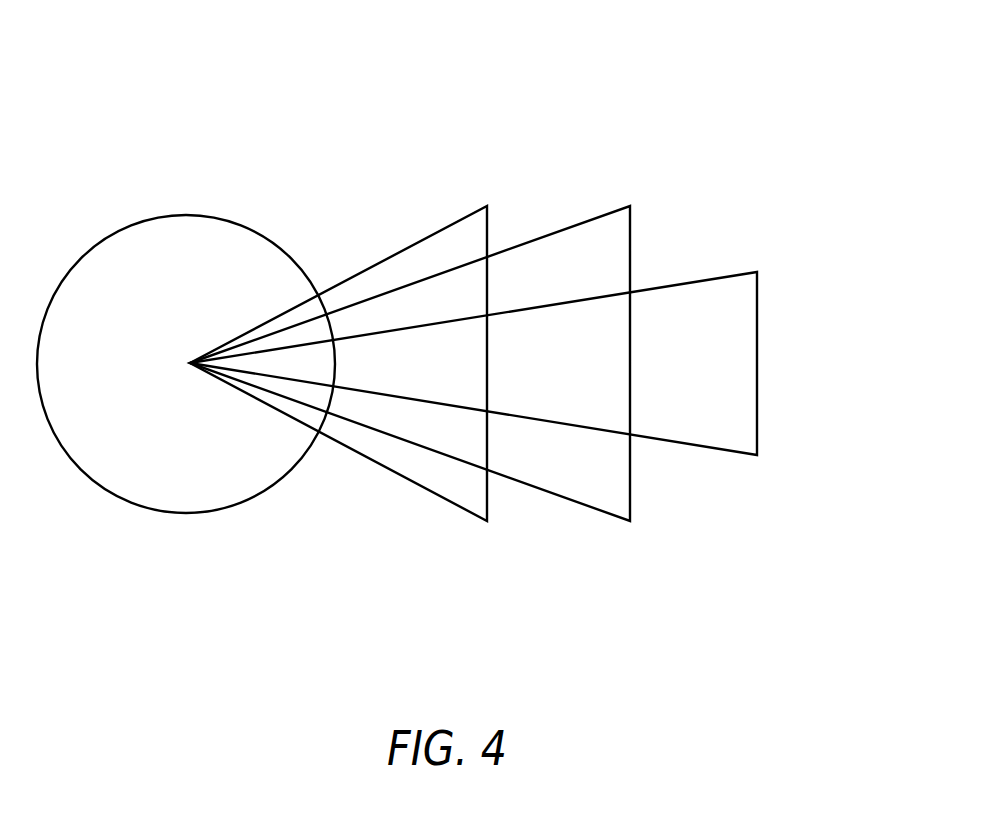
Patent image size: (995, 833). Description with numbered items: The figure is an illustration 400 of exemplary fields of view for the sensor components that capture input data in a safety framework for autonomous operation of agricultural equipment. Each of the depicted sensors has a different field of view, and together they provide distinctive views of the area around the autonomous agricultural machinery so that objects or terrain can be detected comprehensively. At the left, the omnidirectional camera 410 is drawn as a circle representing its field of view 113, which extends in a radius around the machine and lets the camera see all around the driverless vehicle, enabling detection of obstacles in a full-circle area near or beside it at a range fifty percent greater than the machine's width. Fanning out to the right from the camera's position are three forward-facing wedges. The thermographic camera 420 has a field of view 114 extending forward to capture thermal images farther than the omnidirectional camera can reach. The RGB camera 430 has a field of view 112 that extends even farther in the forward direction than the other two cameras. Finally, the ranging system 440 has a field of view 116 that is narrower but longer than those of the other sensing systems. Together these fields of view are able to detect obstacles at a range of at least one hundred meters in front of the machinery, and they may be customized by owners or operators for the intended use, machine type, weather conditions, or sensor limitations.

The illustration 400 is at (812, 184).
The field of view of 360° camera 113 is at (183, 215).
The field of view of thermographic camera 114 is at (425, 237).
The field of view of RGB camera 112 is at (575, 223).
The field of view of ranging system 116 is at (707, 275).
The 360° camera 410 is at (186, 357).
The thermographic camera 420 is at (338, 345).
The RGB camera 430 is at (410, 338).
The ranging system 440 is at (473, 363).